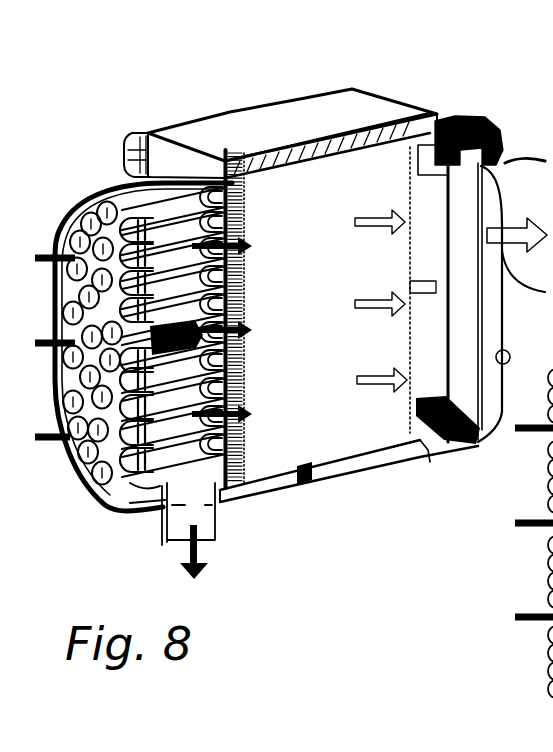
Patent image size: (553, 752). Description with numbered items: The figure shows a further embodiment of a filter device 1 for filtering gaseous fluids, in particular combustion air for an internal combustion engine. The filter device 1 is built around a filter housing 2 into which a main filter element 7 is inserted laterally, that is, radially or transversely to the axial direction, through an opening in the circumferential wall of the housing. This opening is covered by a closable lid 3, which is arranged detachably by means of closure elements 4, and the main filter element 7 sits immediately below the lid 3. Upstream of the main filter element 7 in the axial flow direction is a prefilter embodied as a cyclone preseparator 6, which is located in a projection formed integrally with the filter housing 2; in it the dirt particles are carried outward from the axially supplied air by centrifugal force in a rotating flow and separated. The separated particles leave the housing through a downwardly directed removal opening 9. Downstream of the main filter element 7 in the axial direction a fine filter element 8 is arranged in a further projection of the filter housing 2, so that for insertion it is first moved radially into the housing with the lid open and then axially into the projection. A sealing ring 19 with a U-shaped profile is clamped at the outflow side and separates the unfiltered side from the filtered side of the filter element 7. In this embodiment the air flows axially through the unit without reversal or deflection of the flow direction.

The filter device 1 is at (124, 79).
The filter housing 2 is at (242, 493).
The lid 3 is at (192, 136).
The closure elements 4 is at (130, 152).
The cyclone preseparator 6 is at (90, 512).
The main filter element 7 is at (341, 465).
The fine filter element 8 is at (490, 322).
The removal opening 9 is at (165, 542).
The sealing ring 19 is at (408, 466).